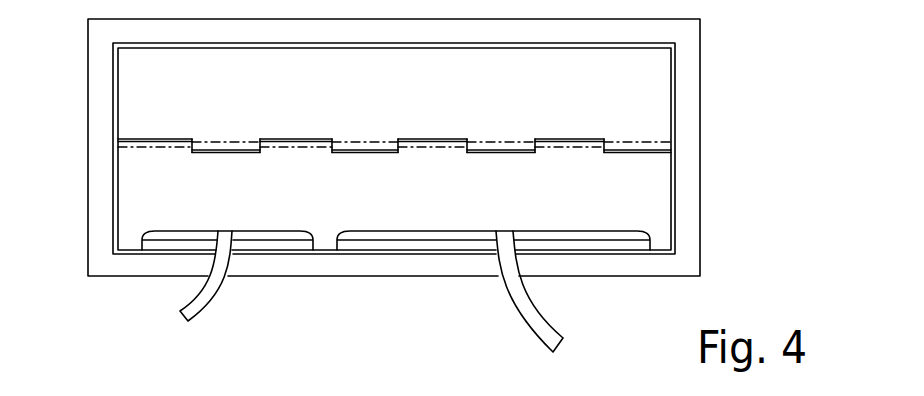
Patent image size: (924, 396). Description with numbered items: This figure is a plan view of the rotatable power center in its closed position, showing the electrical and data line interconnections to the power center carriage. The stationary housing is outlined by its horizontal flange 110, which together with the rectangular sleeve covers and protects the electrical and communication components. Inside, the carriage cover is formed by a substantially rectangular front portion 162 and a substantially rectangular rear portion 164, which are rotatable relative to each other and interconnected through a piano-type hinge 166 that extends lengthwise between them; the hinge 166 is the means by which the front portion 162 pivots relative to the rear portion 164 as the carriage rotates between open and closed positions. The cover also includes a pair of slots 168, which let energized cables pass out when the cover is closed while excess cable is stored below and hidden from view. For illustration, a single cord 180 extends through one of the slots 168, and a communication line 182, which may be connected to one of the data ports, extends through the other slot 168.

The horizontal flange 110 is at (100, 85).
The front portion of cover 162 is at (662, 187).
The rear portion of cover 164 is at (662, 97).
The piano-type hinge 166 is at (667, 147).
The slots 168 is at (288, 238).
The cord 180 is at (515, 305).
The communication line 182 is at (213, 291).